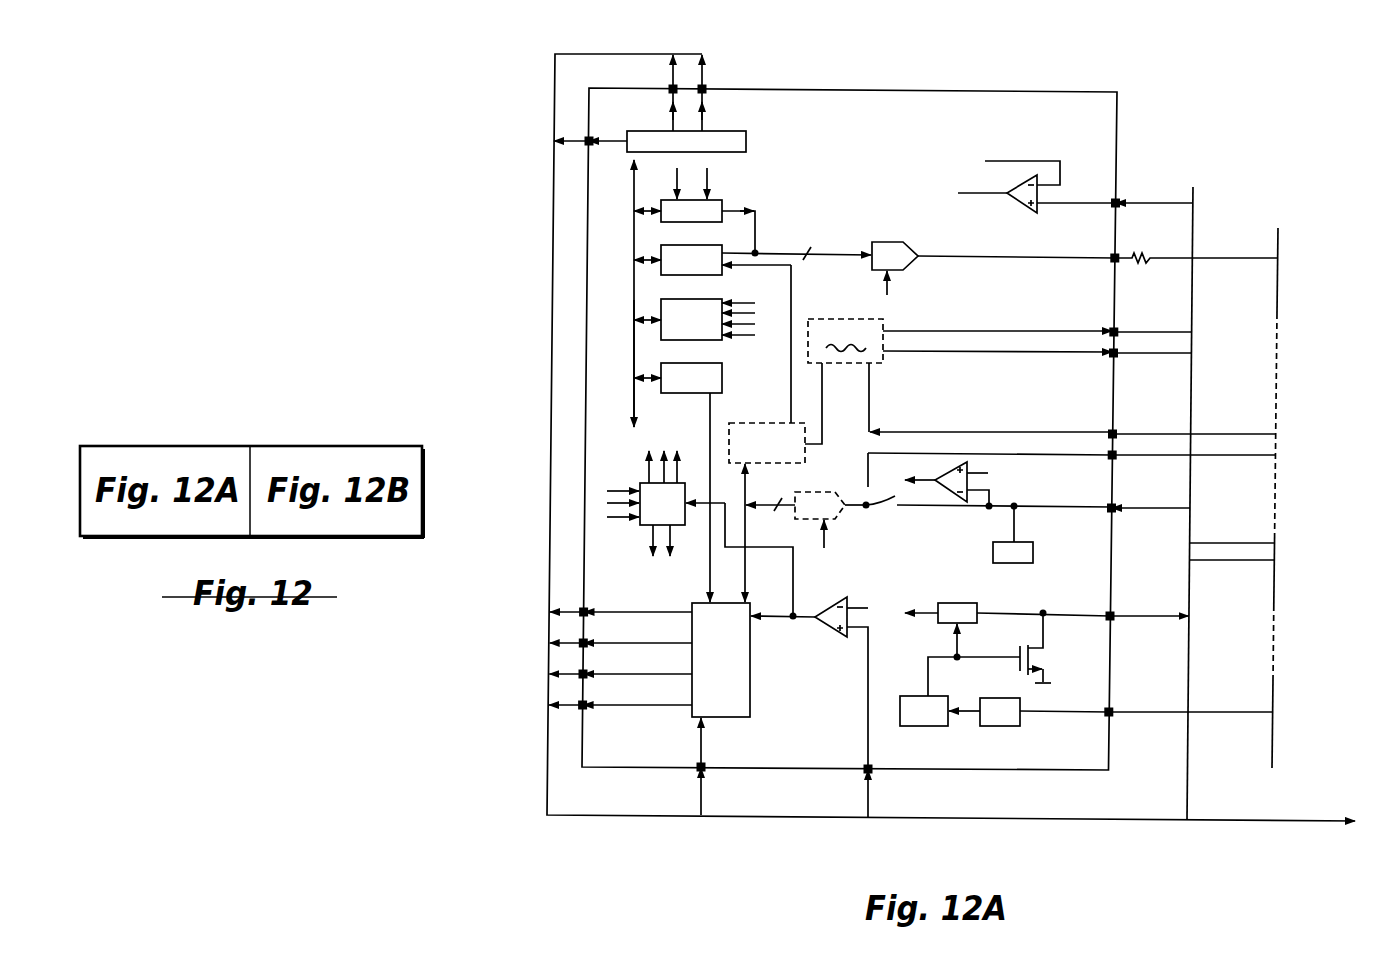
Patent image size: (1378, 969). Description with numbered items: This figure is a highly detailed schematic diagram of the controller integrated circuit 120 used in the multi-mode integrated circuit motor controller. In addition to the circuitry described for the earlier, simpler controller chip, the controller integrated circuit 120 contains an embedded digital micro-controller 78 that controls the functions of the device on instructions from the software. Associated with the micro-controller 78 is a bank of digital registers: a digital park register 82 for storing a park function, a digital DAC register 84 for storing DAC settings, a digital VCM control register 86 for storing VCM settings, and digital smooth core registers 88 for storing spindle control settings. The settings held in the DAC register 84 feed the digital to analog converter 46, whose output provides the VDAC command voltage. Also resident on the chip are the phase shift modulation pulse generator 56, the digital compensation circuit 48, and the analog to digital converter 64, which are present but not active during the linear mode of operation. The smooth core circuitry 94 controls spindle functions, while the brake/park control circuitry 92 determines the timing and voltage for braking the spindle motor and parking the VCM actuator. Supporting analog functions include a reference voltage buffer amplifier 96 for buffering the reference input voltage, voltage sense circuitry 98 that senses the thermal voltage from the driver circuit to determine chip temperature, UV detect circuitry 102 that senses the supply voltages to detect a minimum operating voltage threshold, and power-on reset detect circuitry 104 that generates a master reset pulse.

The controller integrated circuit 120 is at (508, 90).
The embedded digital micro-controller 78 is at (728, 131).
The digital park register 82 is at (722, 200).
The digital DAC register 84 is at (721, 275).
The digital VCM control register 86 is at (721, 340).
The digital smooth core registers 88 is at (690, 393).
The digital to analog converter 46 is at (890, 242).
The reference voltage buffer amplifier 96 is at (1016, 210).
The phase shift modulation pulse generator 56 is at (836, 319).
The digital compensation circuit 48 is at (768, 422).
The analog to digital converter 64 is at (813, 492).
The brake/park control circuitry 92 is at (642, 526).
The smooth core circuitry 94 is at (750, 690).
The voltage sense circuitry 98 is at (1033, 553).
The power-on reset detect circuitry 104 is at (957, 603).
The UV detect circuitry 102 is at (1000, 726).